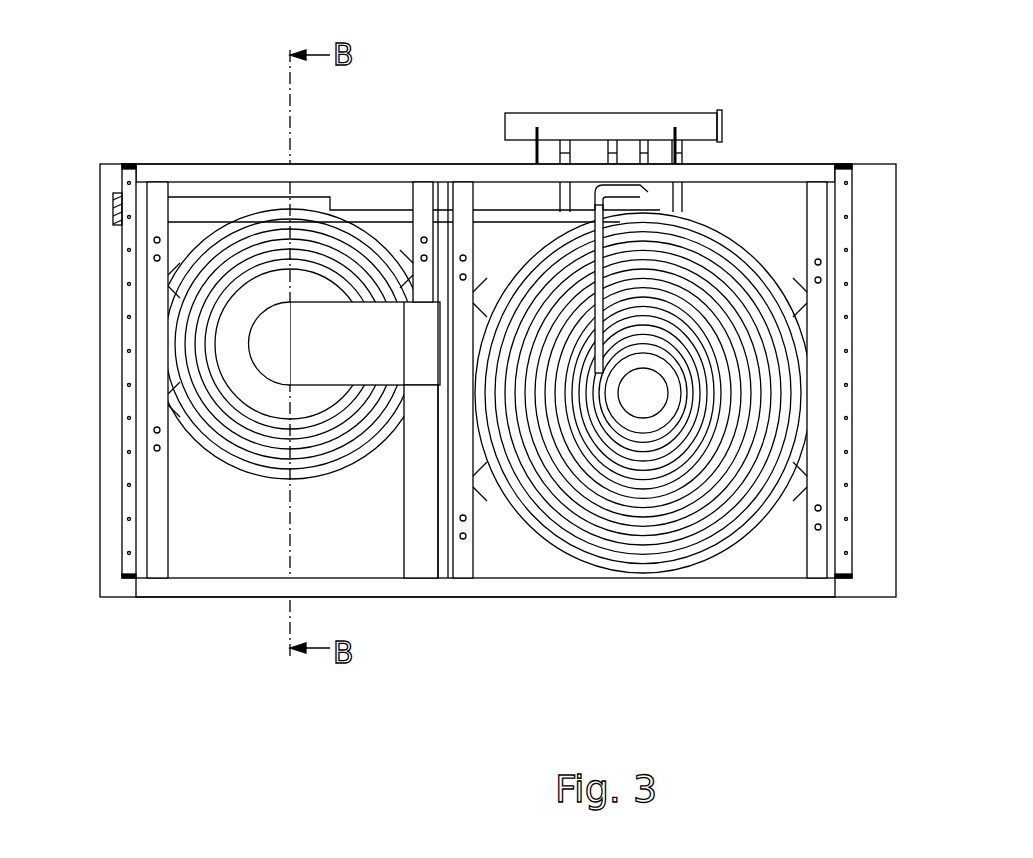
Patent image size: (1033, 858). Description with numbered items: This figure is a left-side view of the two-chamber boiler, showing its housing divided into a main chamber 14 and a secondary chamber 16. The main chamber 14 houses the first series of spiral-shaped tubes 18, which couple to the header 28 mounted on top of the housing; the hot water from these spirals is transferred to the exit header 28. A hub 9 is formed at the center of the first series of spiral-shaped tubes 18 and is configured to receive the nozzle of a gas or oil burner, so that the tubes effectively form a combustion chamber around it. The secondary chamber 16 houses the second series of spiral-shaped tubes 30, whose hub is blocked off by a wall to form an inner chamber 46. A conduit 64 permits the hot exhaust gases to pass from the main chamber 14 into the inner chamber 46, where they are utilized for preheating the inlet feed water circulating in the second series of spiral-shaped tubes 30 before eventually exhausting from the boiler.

The hub 9 is at (672, 402).
The main chamber 14 is at (762, 568).
The secondary chamber 16 is at (187, 565).
The first series of spiral-shaped tubes 18 is at (712, 262).
The header 28 is at (548, 110).
The second series of spiral-shaped tubes 30 is at (236, 250).
The inner chamber 46 is at (225, 343).
The conduit 64 is at (361, 338).